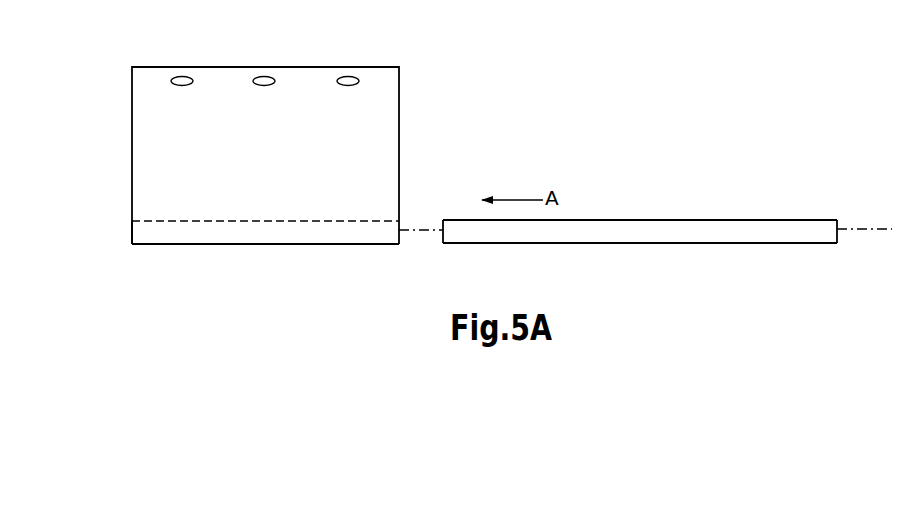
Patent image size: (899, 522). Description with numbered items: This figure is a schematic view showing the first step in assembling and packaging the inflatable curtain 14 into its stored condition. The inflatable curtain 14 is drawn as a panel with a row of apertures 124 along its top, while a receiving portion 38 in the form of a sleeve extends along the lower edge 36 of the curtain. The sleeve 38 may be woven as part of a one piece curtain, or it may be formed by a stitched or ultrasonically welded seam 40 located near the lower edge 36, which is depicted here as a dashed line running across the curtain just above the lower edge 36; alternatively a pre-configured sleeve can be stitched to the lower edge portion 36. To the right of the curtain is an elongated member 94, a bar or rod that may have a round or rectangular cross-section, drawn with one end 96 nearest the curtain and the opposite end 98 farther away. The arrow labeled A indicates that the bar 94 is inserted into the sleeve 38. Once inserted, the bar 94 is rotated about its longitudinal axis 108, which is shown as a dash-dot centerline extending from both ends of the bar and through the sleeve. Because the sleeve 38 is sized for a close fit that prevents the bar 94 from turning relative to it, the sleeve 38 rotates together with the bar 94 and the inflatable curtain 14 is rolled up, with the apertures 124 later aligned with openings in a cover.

The inflatable curtain 14 is at (332, 114).
The apertures 124 is at (348, 76).
The seam 40 is at (401, 215).
The lower edge 36 is at (330, 245).
The receiving portion 38 is at (185, 253).
The elongated member 94 is at (712, 232).
The first end of bar 96 is at (458, 235).
The second end of bar 98 is at (813, 230).
The longitudinal axis 108 is at (863, 227).